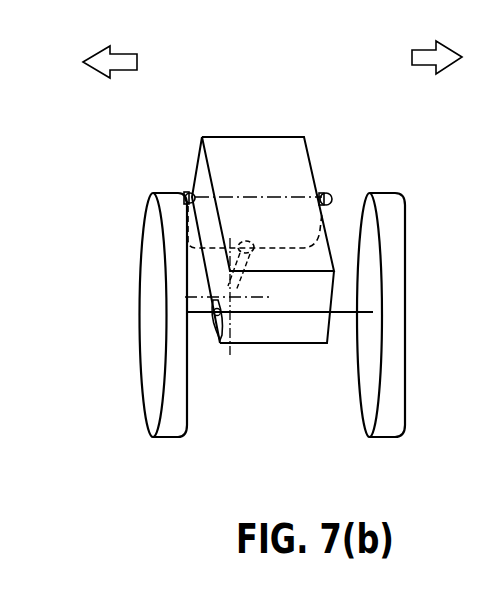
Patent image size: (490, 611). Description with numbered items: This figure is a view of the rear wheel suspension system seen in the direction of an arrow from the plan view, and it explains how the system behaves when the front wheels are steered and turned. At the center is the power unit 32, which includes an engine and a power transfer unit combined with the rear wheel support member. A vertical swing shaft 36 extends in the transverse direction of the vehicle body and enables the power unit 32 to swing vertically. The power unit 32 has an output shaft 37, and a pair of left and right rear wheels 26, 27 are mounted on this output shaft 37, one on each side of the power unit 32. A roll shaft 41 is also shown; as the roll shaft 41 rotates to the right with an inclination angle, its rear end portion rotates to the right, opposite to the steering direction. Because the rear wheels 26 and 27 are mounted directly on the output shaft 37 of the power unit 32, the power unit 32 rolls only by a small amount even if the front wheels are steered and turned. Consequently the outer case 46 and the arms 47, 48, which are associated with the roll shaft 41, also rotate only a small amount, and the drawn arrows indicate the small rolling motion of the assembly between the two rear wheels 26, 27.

The rear wheel 26 is at (140, 352).
The rear wheel 27 is at (405, 365).
The power unit 32 is at (310, 155).
The vertical swing shaft 36 is at (252, 197).
The output shaft 37 is at (270, 315).
The roll shaft 41 is at (232, 283).
The outer case 46 is at (250, 255).
The arm 47 is at (186, 226).
The arm 48 is at (332, 208).